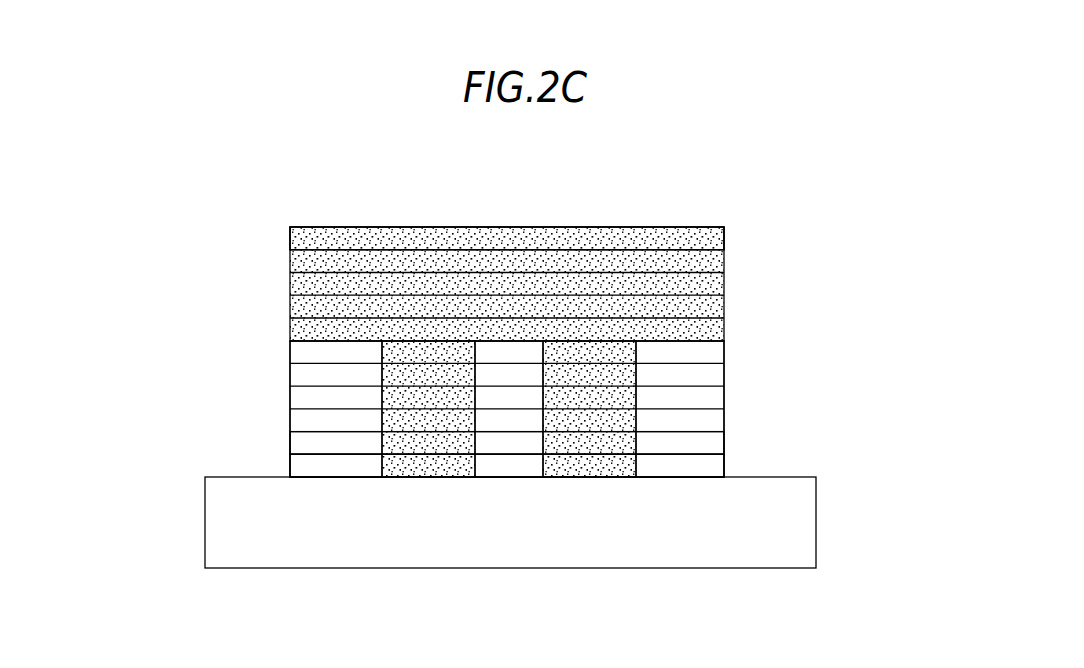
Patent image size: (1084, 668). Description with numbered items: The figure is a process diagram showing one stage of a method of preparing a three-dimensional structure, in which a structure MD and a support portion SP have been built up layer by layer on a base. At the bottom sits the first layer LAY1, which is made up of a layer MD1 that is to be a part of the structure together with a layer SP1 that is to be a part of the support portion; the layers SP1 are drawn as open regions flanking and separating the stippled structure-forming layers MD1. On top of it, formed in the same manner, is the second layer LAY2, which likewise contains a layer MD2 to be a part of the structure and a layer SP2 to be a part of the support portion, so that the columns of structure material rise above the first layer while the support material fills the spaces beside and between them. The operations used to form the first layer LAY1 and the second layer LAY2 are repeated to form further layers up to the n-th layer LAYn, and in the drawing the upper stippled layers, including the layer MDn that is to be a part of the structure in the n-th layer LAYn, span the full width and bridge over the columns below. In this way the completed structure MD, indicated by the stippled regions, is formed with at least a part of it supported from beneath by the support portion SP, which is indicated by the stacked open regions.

The structure MD is at (265, 277).
The layer to be a part of the structure in the n-th layer MDn is at (445, 226).
The layer to be a part of the structure in the second layer MD2 is at (428, 442).
The layer to be a part of the structure in the first layer MD1 is at (427, 465).
The support portion SP is at (277, 430).
The layer to be a part of the support portion in the second layer SP2 is at (507, 443).
The layer to be a part of the support portion in the first layer SP1 is at (338, 465).
The n-th layer LAYn is at (725, 233).
The second layer LAY2 is at (724, 442).
The first layer LAY1 is at (724, 466).